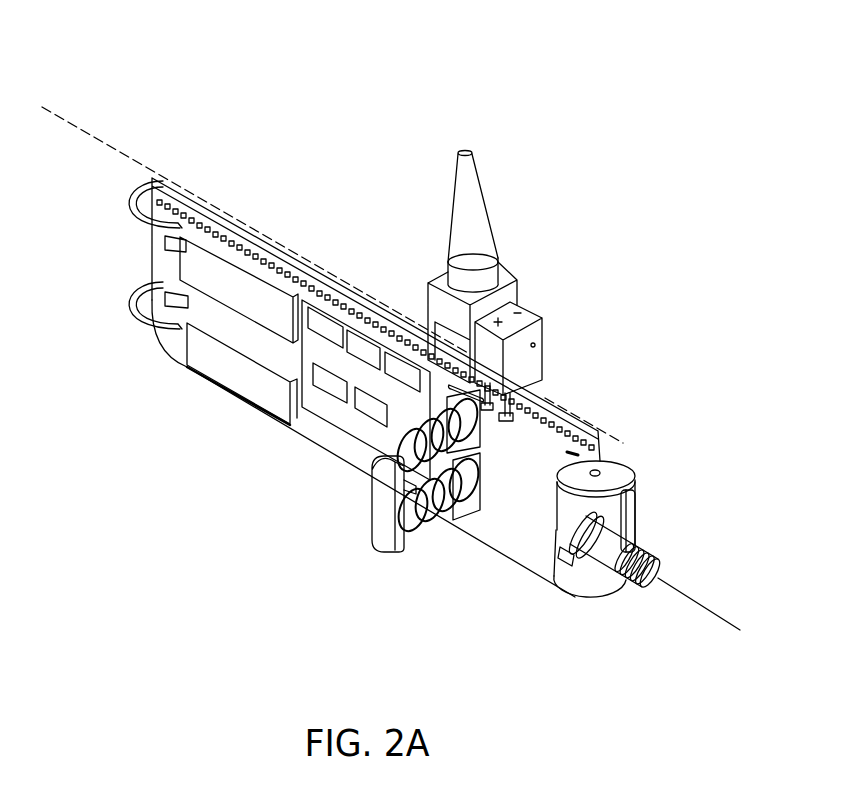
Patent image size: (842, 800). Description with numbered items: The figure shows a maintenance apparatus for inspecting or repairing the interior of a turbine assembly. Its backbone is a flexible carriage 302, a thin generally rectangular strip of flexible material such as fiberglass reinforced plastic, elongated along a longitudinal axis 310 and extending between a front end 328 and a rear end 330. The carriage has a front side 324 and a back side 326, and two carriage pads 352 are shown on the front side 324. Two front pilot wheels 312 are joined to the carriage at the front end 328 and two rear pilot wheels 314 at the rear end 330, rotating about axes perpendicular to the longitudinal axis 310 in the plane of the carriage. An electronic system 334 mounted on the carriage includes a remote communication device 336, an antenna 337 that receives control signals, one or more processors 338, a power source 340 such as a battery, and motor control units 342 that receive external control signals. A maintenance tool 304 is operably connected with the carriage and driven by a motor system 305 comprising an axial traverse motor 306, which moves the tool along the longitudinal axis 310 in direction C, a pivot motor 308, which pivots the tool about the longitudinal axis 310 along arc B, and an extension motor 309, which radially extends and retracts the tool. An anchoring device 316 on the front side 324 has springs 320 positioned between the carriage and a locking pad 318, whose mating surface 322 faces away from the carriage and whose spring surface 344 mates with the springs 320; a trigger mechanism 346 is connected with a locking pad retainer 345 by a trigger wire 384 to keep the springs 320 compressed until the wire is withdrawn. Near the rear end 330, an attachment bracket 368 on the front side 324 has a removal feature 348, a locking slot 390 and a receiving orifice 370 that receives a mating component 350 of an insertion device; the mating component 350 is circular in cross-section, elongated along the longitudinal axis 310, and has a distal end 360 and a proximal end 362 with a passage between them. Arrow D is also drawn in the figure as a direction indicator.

The flexible carriage 302 is at (575, 408).
The maintenance tool 304 is at (519, 251).
The motor system 305 is at (560, 274).
The axial traverse motor 306 is at (545, 297).
The pivot motor 308 is at (430, 325).
The extension motor 309 is at (558, 342).
The longitudinal axis 310 is at (68, 98).
The front pilot wheels 312 is at (127, 192).
The rear pilot wheels 314 is at (632, 458).
The anchoring device 316 is at (428, 562).
The locking pad 318 is at (334, 509).
The springs 320 is at (437, 533).
The mating surface 322 is at (374, 515).
The front side 324 is at (198, 396).
The back side 326 is at (233, 205).
The front end 328 is at (136, 249).
The rear end 330 is at (649, 506).
The electronic system 334 is at (327, 390).
The remote communication device 336 is at (323, 323).
The antenna 337 is at (410, 380).
The processors 338 is at (363, 350).
The power source 340 is at (296, 383).
The motor control units 342 is at (373, 410).
The spring surface 344 is at (416, 540).
The locking pad retainer 345 is at (378, 524).
The trigger mechanism 346 is at (478, 477).
The removal feature 348 is at (638, 533).
The mating component 350 is at (656, 592).
The carriage pads 352 is at (238, 408).
The distal end 360 is at (642, 592).
The proximal end 362 is at (565, 549).
The attachment bracket 368 is at (554, 583).
The receiving orifice 370 is at (634, 520).
The trigger wire 384 is at (724, 616).
The locking slot 390 is at (557, 553).
The arc B is at (92, 180).
The direction C is at (276, 216).
The axial direction D is at (673, 613).